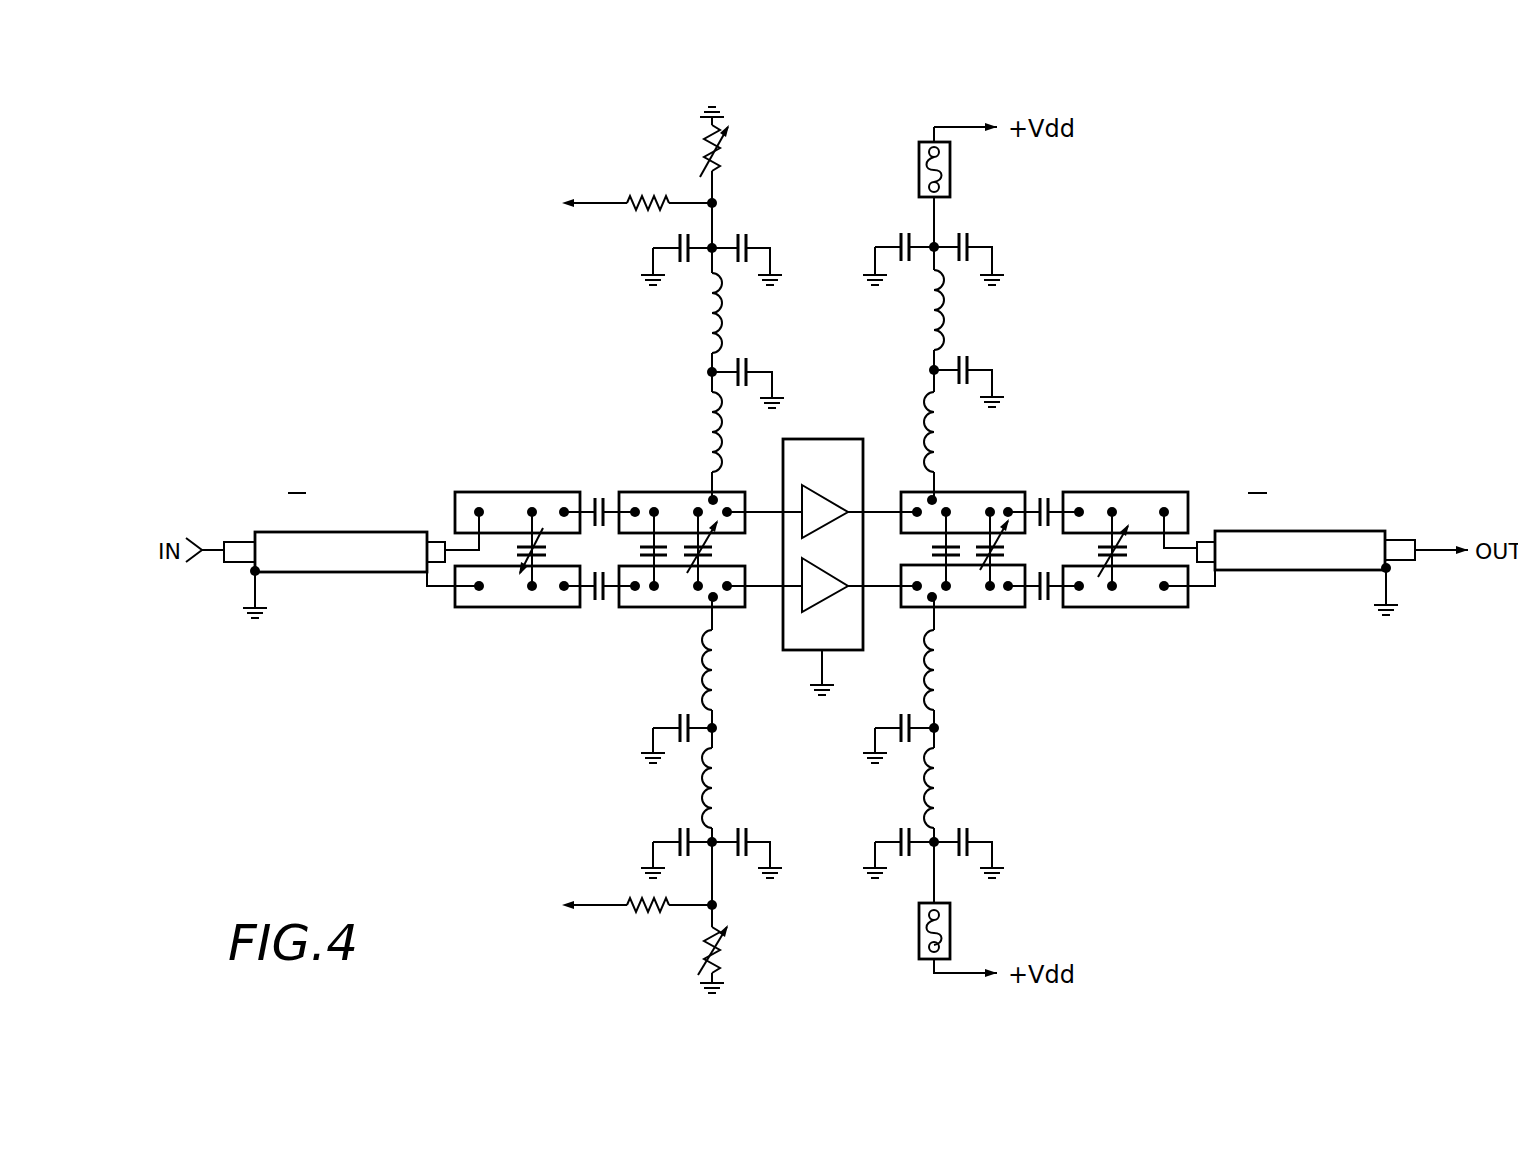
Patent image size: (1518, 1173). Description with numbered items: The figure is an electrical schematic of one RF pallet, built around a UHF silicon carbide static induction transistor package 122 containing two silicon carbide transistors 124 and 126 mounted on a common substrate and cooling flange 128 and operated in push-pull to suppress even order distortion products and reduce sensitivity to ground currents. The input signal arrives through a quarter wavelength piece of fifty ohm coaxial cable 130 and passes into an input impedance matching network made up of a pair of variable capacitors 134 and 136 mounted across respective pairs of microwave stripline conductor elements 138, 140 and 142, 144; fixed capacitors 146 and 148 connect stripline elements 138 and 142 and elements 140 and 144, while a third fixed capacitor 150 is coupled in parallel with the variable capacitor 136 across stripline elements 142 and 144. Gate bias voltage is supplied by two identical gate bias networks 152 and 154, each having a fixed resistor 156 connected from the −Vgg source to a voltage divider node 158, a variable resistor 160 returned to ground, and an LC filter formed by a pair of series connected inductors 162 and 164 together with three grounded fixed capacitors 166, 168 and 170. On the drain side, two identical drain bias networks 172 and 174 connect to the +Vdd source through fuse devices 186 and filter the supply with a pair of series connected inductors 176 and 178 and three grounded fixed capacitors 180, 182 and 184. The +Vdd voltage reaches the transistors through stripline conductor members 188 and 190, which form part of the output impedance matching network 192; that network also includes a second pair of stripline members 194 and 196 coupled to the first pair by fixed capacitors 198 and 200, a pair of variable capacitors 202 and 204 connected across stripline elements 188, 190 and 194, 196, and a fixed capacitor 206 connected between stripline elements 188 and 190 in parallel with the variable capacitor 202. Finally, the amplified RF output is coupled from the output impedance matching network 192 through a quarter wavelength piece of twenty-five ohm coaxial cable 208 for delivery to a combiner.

The UHF silicon carbide static induction transistor package 122 is at (819, 439).
The silicon carbide transistor 124 is at (812, 537).
The silicon carbide transistor 126 is at (812, 612).
The common substrate and cooling flange 128 is at (790, 638).
The 50 ohm coaxial cable 130 is at (322, 573).
The variable capacitor 134 is at (517, 550).
The variable capacitor 136 is at (713, 550).
The microwave stripline conductor element 138 is at (485, 492).
The microwave stripline conductor element 140 is at (527, 607).
The microwave stripline conductor element 142 is at (633, 492).
The microwave stripline conductor element 144 is at (640, 607).
The fixed capacitor 146 is at (597, 498).
The fixed capacitor 148 is at (602, 598).
The third fixed capacitor 150 is at (640, 547).
The gate bias network 152 is at (598, 335).
The gate bias network 154 is at (585, 775).
The fixed resistor 156 is at (653, 195).
The voltage divider node 158 is at (718, 195).
The variable resistor 160 is at (710, 140).
The inductor 162 is at (713, 332).
The inductor 164 is at (707, 395).
The fixed capacitor 166 is at (677, 240).
The fixed capacitor 168 is at (750, 240).
The fixed capacitor 170 is at (752, 360).
The drain bias network 172 is at (1017, 300).
The drain bias network 174 is at (1017, 728).
The inductor 176 is at (940, 332).
The inductor 178 is at (930, 393).
The grounded fixed capacitor 180 is at (898, 233).
The grounded fixed capacitor 182 is at (972, 235).
The grounded fixed capacitor 184 is at (972, 358).
The fuse device 186 is at (919, 158).
The stripline conductor member 188 is at (960, 492).
The stripline conductor member 190 is at (957, 607).
The output impedance matching network 192 is at (1122, 408).
The stripline member 194 is at (1100, 492).
The stripline member 196 is at (1105, 607).
The fixed capacitor 198 is at (1052, 495).
The fixed capacitor 200 is at (1040, 603).
The variable capacitor 202 is at (1007, 550).
The variable capacitor 204 is at (1123, 555).
The fixed capacitor 206 is at (932, 547).
The 25 ohm coaxial cable 208 is at (1283, 572).